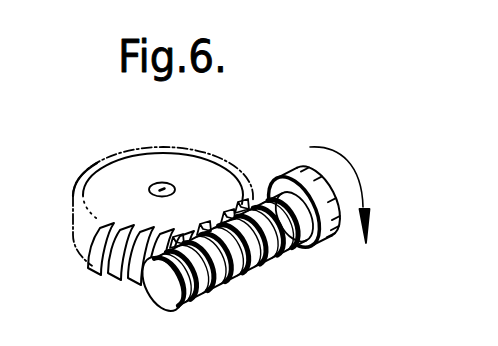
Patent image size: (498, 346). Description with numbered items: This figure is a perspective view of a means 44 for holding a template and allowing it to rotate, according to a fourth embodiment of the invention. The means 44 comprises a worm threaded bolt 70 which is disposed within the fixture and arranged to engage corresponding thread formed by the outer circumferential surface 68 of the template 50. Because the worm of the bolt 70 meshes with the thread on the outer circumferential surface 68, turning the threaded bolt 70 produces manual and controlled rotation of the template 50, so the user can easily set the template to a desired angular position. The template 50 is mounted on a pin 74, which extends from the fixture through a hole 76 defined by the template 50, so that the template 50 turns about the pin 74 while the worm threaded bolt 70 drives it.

The means for holding and rotating a template 44 is at (267, 135).
The template 50 is at (110, 178).
The outer circumferential surface 68 is at (121, 291).
The worm threaded bolt 70 is at (313, 241).
The pin 74 is at (170, 183).
The hole 76 is at (156, 184).